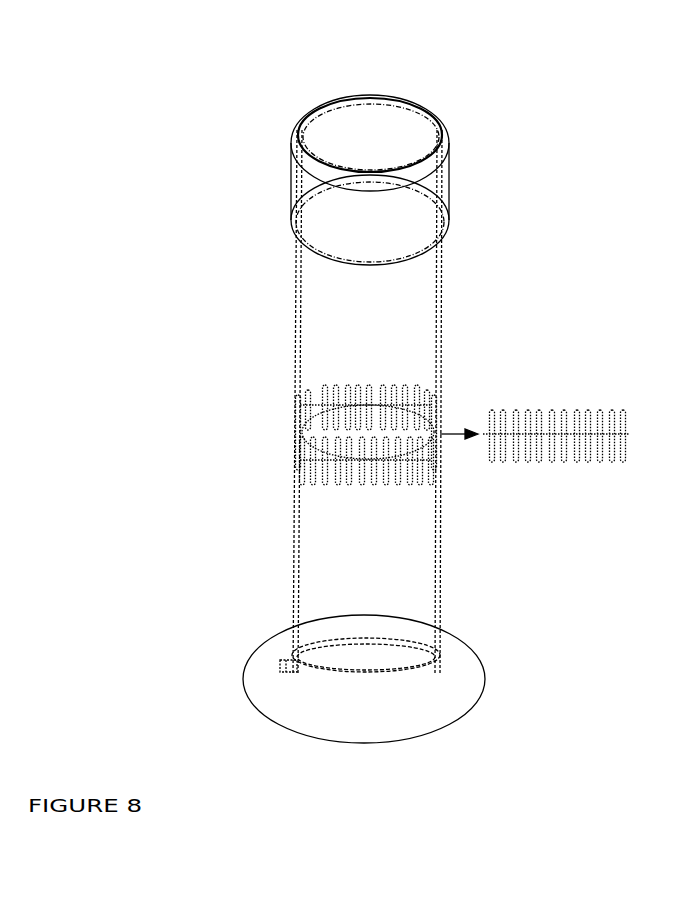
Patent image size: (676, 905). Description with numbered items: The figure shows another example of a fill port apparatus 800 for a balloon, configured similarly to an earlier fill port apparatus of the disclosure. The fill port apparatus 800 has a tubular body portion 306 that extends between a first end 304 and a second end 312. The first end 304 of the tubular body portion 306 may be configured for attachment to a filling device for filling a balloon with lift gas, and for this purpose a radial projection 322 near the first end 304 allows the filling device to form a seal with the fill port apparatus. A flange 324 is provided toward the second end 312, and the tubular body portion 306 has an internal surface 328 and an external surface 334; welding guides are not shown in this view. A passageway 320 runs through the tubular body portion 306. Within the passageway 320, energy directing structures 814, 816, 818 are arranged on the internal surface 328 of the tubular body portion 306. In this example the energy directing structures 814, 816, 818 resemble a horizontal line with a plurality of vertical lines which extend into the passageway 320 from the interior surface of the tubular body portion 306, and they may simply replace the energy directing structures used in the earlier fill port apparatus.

The fill port apparatus 800 is at (165, 312).
The first end 304 is at (350, 78).
The radial projection 322 is at (292, 165).
The tubular body portion 306 is at (298, 292).
The passageway 320 is at (370, 175).
The internal surface 328 is at (330, 518).
The external surface 334 is at (278, 665).
The flange 324 is at (245, 697).
The second end 312 is at (345, 770).
The energy directing structure 814 is at (396, 386).
The energy directing structure 816 is at (378, 380).
The energy directing structure 818 is at (356, 378).